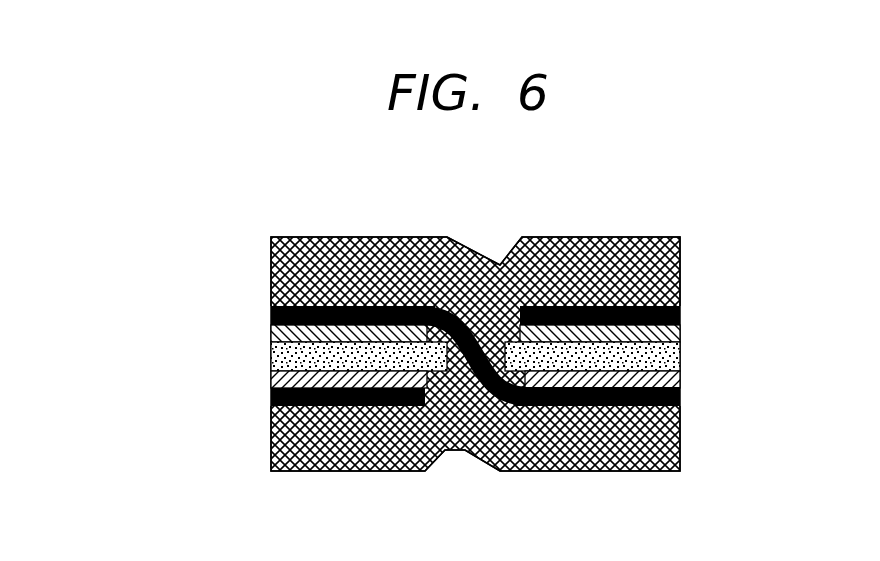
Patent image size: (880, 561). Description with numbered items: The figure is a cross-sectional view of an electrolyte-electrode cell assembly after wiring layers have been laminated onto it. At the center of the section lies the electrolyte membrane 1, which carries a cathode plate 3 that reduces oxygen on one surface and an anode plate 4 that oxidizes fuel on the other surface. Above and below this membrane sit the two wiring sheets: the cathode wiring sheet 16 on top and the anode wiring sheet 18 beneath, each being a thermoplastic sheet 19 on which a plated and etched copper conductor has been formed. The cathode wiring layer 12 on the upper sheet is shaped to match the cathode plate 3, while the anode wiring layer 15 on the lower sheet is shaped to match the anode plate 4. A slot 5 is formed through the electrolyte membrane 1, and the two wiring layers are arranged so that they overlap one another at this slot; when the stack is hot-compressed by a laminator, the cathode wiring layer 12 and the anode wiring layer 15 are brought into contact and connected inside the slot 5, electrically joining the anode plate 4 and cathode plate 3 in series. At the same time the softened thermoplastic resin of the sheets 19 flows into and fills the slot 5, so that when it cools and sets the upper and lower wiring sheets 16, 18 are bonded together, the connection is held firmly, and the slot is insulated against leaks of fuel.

The electrolyte membrane 1 is at (681, 362).
The cathode plate 3 is at (681, 334).
The anode plate 4 is at (681, 378).
The slot 5 is at (455, 380).
The cathode wiring layer 12 is at (681, 317).
The anode wiring layer 15 is at (681, 397).
The cathode wiring sheet 16 is at (270, 238).
The anode wiring sheet 18 is at (270, 387).
The thermoplastic sheet 19 is at (608, 246).